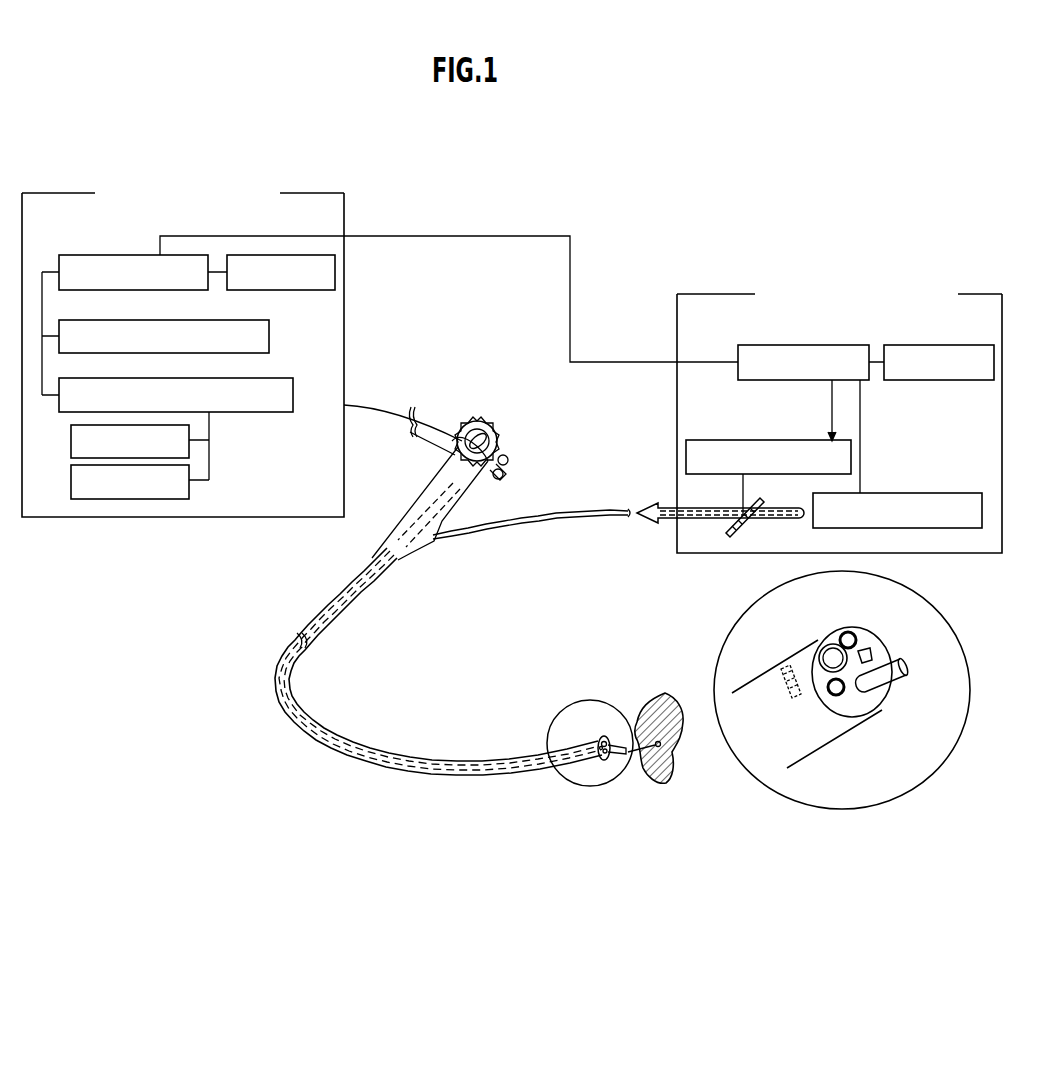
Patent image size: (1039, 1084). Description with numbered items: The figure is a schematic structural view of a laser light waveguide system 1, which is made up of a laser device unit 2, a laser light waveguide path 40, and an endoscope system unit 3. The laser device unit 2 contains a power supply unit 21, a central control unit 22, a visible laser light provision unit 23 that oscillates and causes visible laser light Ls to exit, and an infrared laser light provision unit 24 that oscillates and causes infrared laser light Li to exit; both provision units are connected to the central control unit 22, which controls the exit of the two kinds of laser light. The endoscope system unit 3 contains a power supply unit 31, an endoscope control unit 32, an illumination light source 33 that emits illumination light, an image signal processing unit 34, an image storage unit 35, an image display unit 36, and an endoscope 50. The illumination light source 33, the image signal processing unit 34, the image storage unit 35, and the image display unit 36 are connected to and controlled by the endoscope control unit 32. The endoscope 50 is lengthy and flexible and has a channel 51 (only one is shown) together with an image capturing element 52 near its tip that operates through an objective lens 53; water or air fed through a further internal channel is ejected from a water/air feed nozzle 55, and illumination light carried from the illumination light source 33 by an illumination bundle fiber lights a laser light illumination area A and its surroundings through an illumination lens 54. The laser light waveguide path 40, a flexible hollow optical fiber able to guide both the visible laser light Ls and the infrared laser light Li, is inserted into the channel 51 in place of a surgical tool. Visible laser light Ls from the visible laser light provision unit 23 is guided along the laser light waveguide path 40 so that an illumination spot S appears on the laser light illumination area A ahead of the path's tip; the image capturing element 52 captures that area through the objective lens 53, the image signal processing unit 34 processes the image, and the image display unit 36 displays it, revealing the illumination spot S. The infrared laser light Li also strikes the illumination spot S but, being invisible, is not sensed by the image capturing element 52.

The laser light waveguide system 1 is at (951, 200).
The laser device unit 2 is at (893, 281).
The endoscope system unit 3 is at (333, 209).
The power supply unit 21 is at (920, 381).
The central control unit 22 is at (833, 345).
The visible laser light provision unit 23 is at (765, 440).
The infrared laser light provision unit 24 is at (905, 493).
The power supply unit 31 is at (318, 291).
The endoscope control unit 32 is at (80, 256).
The illumination light source 33 is at (236, 320).
The image signal processing unit 34 is at (275, 378).
The image storage unit 35 is at (71, 442).
The image display unit 36 is at (71, 483).
The laser light waveguide path 40 is at (557, 510).
The endoscope 50 is at (357, 593).
The channel 51 is at (890, 713).
The image capturing element 52 is at (783, 668).
The objective lens 53 is at (830, 655).
The illumination lens 54 is at (848, 632).
The water/air feed nozzle 55 is at (870, 650).
The laser light illumination area A is at (653, 700).
The illumination spot S is at (662, 748).
The visible laser light Ls is at (743, 500).
The infrared laser light Li is at (783, 514).